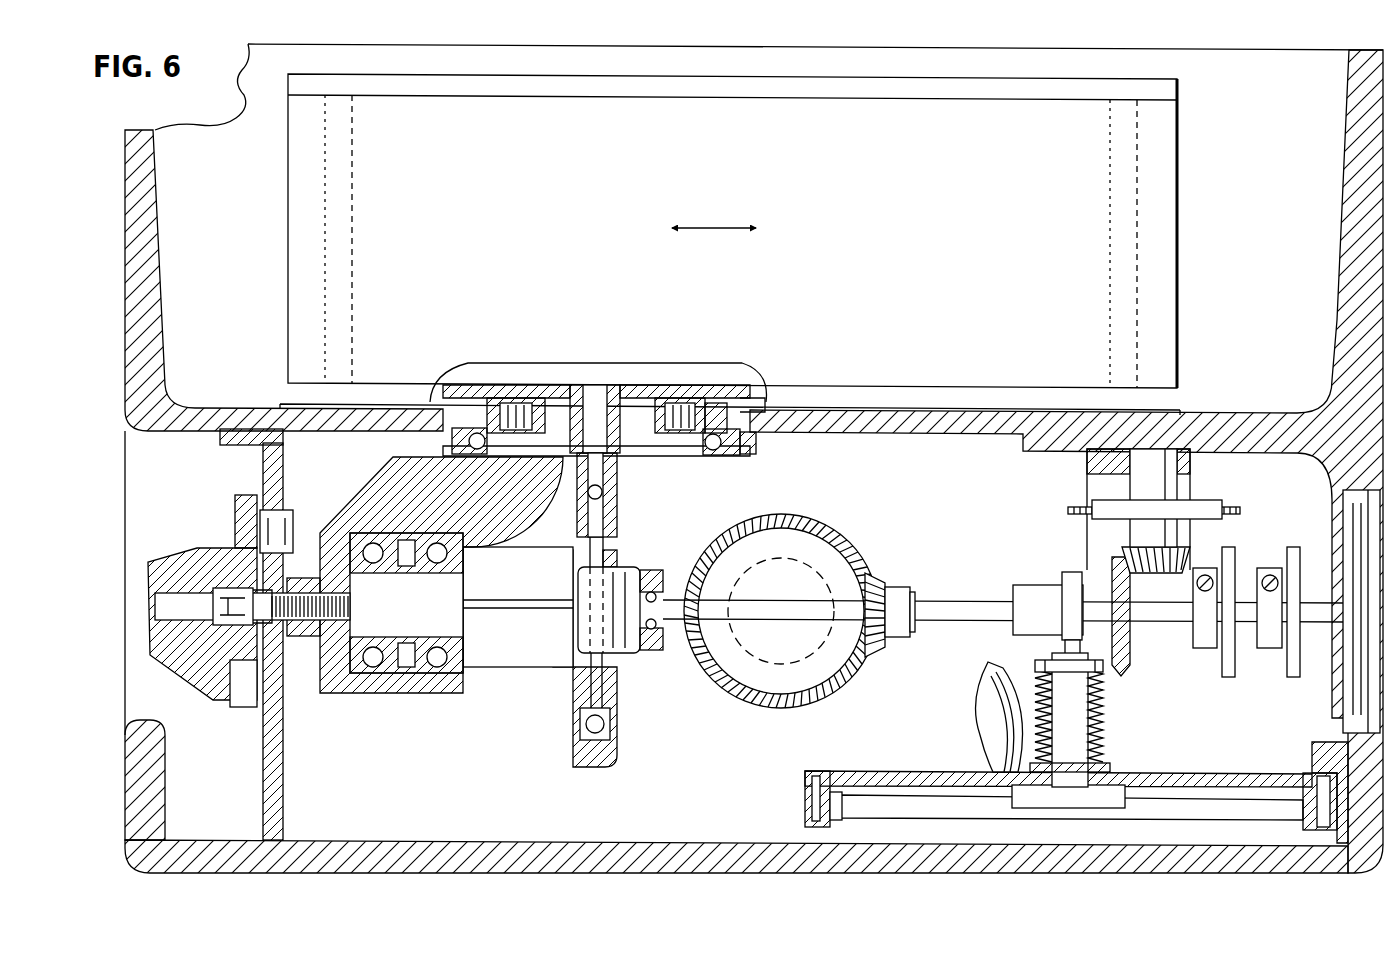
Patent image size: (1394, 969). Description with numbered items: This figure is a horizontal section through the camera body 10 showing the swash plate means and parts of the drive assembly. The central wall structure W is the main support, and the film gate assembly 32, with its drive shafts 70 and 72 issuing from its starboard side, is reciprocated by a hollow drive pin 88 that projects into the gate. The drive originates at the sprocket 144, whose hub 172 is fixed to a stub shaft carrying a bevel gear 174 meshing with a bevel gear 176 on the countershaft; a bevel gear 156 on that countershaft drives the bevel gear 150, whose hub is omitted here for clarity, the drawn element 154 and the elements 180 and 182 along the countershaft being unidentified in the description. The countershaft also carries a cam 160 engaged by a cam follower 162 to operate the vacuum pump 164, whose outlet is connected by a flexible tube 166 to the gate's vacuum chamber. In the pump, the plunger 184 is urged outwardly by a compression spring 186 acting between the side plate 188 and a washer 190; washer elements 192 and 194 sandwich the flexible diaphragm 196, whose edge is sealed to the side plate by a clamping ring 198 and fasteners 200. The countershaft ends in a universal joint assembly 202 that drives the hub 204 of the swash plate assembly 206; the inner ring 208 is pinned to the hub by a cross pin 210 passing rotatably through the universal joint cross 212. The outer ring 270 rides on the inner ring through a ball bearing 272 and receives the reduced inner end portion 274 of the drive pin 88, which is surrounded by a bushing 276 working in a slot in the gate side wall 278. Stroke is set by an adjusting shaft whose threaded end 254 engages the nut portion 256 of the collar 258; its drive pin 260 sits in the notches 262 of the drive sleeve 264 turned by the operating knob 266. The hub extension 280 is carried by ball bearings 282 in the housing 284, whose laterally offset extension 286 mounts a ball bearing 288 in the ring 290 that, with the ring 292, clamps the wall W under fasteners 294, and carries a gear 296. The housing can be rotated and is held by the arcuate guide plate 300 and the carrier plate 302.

The camera body 10 is at (113, 382).
The film gate assembly 32 is at (283, 208).
The drive shaft 70 is at (345, 203).
The drive shaft 72 is at (1122, 182).
The central wall structure W is at (903, 411).
The drive pin 88 is at (596, 392).
The sprocket 144 is at (1213, 506).
The bevel gear 150 is at (722, 687).
The hub 154 is at (770, 657).
The bevel gear 156 is at (886, 580).
The eccentric or cam 160 is at (1068, 578).
The cam follower 162 is at (1068, 652).
The vacuum pump 164 is at (1232, 753).
The flexible tube 166 is at (980, 703).
The hub 172 is at (1160, 490).
The bevel gear 174 is at (1168, 530).
The bevel gear 176 is at (1114, 565).
The disc 180 is at (1232, 559).
The disc 182 is at (1295, 551).
The plunger 184 is at (1082, 702).
The compression spring 186 is at (1102, 712).
The side plate 188 is at (1170, 778).
The washer 190 is at (1105, 668).
The washer element 192 is at (1095, 780).
The washer element 194 is at (1060, 808).
The flexible diaphragm 196 is at (1150, 805).
The clamping ring 198 is at (804, 800).
The fasteners 200 is at (820, 771).
The universal joint assembly 202 is at (641, 567).
The hub 204 is at (510, 650).
The swash plate assembly 206 is at (627, 500).
The inner ring 208 is at (618, 680).
The cross pin 210 is at (603, 531).
The universal joint cross 212 is at (585, 603).
The threaded end 254 is at (299, 592).
The threaded nut portion 256 is at (318, 585).
The collar 258 is at (298, 625).
The drive pin 260 is at (215, 660).
The elongate slot or notches 262 is at (207, 595).
The drive sleeve 264 is at (170, 575).
The operating knob 266 is at (158, 575).
The outer ring 270 is at (619, 480).
The ball bearing 272 is at (586, 494).
The reduced inner end portion 274 is at (586, 472).
The bushing 276 is at (618, 410).
The side wall 278 is at (503, 384).
The extension 280 is at (426, 610).
The ball bearings 282 is at (370, 530).
The housing 284 is at (431, 470).
The laterally offset extension 286 is at (716, 452).
The ball bearing 288 is at (477, 433).
The ring 290 is at (745, 397).
The ring 292 is at (710, 415).
The fasteners 294 is at (520, 404).
The gear 296 is at (758, 449).
The arcuate guide plate 300 is at (284, 772).
The carrier plate 302 is at (248, 693).